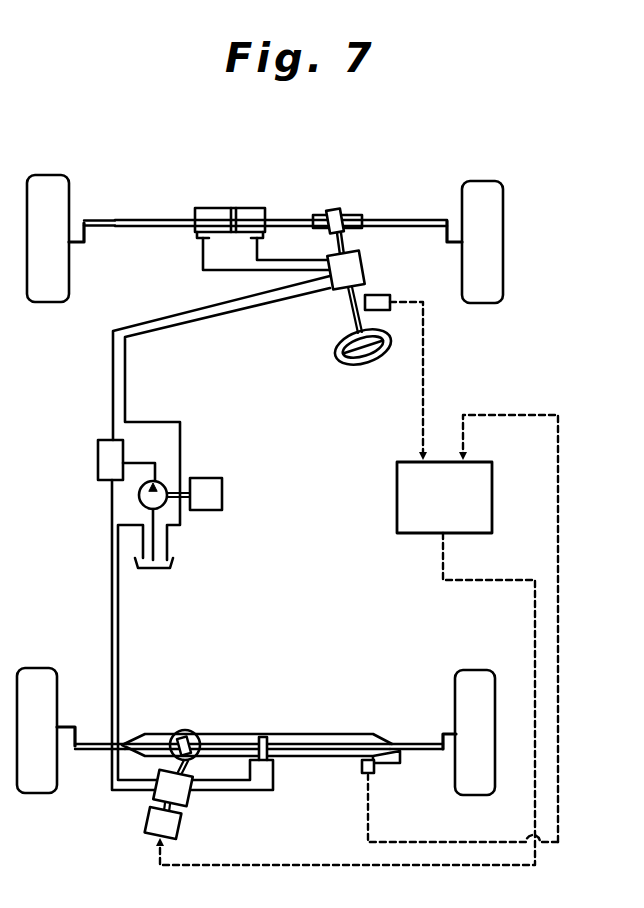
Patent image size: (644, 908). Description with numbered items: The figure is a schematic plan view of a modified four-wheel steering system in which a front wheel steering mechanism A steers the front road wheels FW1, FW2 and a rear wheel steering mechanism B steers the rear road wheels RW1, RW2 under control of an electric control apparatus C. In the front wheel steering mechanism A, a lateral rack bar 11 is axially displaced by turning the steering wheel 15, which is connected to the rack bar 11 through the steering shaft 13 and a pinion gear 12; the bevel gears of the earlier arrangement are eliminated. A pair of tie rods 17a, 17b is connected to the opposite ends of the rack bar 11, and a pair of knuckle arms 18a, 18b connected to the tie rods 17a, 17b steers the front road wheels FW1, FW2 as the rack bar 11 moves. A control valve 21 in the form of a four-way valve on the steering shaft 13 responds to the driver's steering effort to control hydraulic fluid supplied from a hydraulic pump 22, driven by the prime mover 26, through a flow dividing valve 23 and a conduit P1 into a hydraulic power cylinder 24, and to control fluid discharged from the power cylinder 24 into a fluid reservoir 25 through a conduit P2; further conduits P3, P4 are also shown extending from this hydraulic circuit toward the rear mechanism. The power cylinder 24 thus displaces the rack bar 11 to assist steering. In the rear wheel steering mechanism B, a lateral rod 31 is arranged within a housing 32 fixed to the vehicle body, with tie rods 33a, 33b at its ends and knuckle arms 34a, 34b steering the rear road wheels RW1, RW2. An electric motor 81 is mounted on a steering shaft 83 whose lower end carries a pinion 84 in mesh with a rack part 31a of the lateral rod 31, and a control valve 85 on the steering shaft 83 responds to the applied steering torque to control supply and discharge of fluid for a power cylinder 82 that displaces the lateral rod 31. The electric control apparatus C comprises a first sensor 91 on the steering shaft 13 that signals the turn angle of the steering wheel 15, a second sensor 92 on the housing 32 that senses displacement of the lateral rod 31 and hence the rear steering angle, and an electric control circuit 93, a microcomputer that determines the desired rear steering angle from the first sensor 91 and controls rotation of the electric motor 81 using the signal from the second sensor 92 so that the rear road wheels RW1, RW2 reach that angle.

The rack bar 11 is at (348, 215).
The pinion gear 12 is at (333, 209).
The steering shaft 13 is at (355, 314).
The steering wheel 15 is at (345, 361).
The tie rod 17a is at (103, 227).
The tie rod 17b is at (427, 222).
The knuckle arm 18a is at (82, 248).
The knuckle arm 18b is at (447, 240).
The control valve 21 is at (360, 258).
The hydraulic pump 22 is at (165, 490).
The flow dividing valve 23 is at (98, 462).
The hydraulic power cylinder 24 is at (248, 207).
The fluid reservoir 25 is at (173, 566).
The prime mover 26 is at (222, 492).
The lateral rod 31 is at (323, 744).
The rack part 31a is at (192, 740).
The housing 32 is at (347, 730).
The tie rod 33a is at (93, 750).
The tie rod 33b is at (420, 751).
The knuckle arm 34a is at (70, 727).
The knuckle arm 34b is at (443, 738).
The electric motor 81 is at (180, 832).
The power cylinder 82 is at (265, 737).
The steering shaft 83 is at (162, 807).
The pinion 84 is at (183, 730).
The control valve 85 is at (185, 795).
The first sensor 91 is at (378, 272).
The second sensor 92 is at (363, 773).
The electric control circuit 93 is at (397, 494).
The front wheel steering mechanism A is at (256, 326).
The rear wheel steering mechanism B is at (295, 709).
The electric control apparatus C is at (383, 536).
The front road wheel FW1 is at (48, 303).
The front road wheel FW2 is at (485, 303).
The rear road wheel RW1 is at (33, 683).
The rear road wheel RW2 is at (473, 680).
The conduit P1 is at (178, 314).
The conduit P2 is at (205, 317).
The hydraulic pipe P3 is at (112, 596).
The hydraulic pipe P4 is at (118, 598).